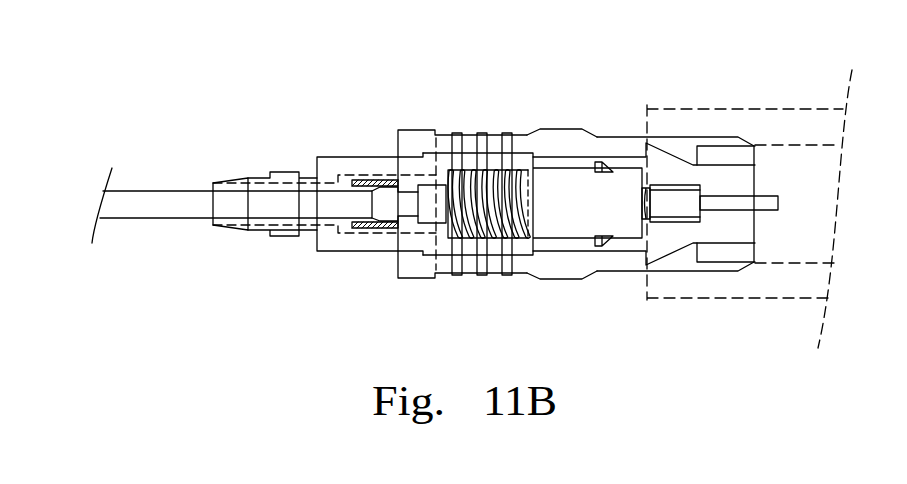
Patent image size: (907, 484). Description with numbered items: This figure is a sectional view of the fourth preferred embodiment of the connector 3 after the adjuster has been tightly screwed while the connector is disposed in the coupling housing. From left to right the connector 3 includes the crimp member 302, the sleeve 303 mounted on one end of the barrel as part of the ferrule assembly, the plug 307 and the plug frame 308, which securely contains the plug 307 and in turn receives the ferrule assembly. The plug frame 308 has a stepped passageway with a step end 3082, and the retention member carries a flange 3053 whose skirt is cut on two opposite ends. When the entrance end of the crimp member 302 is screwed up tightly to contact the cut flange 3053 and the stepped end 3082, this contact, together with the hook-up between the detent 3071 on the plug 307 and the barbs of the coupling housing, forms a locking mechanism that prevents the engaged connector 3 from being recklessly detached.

The connector 3 is at (352, 95).
The crimp member 302 is at (348, 238).
The sleeve 303 is at (370, 177).
The flange 3053 is at (502, 172).
The plug frame 308 is at (568, 268).
The step end 3082 is at (527, 133).
The detent 3071 is at (700, 166).
The plug 307 is at (733, 221).